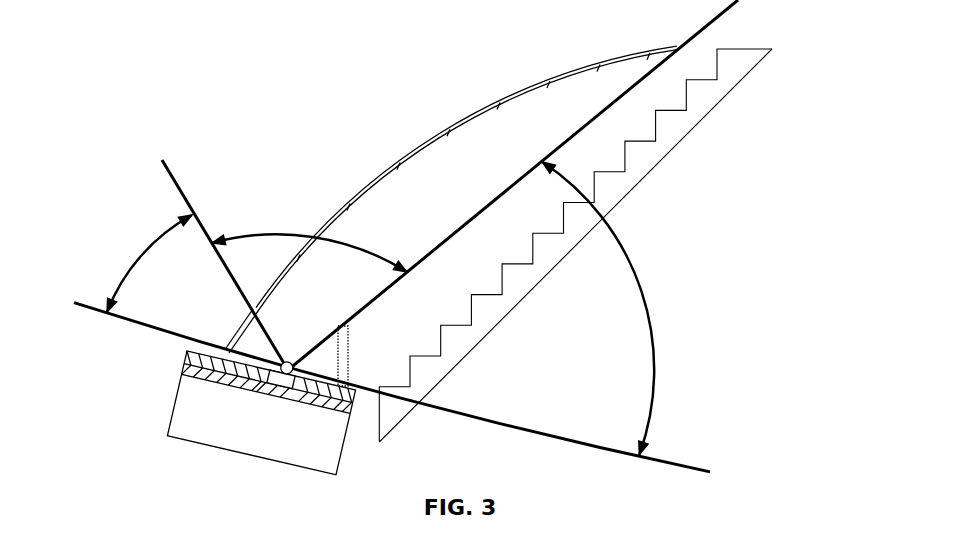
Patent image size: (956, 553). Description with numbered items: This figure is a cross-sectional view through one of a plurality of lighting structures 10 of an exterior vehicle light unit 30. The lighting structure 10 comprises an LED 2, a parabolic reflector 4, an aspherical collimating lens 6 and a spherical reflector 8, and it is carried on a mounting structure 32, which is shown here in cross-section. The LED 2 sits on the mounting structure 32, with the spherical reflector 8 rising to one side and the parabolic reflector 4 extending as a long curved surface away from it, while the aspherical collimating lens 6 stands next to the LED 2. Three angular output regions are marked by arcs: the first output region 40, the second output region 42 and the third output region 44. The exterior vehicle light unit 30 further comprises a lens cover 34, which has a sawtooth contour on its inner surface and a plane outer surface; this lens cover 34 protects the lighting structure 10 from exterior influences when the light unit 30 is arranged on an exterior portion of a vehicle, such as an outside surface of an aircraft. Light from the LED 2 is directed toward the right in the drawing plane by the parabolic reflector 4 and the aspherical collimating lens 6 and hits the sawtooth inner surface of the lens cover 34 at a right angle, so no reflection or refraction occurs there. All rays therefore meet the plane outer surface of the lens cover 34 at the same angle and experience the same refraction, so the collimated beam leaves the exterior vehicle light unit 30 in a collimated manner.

The LED 2 is at (285, 358).
The parabolic reflector 4 is at (621, 63).
The aspherical collimating lens 6 is at (352, 330).
The spherical reflector 8 is at (236, 335).
The lighting structure 10 is at (372, 173).
The exterior vehicle light unit 30 is at (508, 373).
The mounting structure 32 is at (195, 440).
The lens cover 34 is at (400, 419).
The first output region 40 is at (242, 237).
The second output region 42 is at (640, 287).
The third output region 44 is at (138, 258).